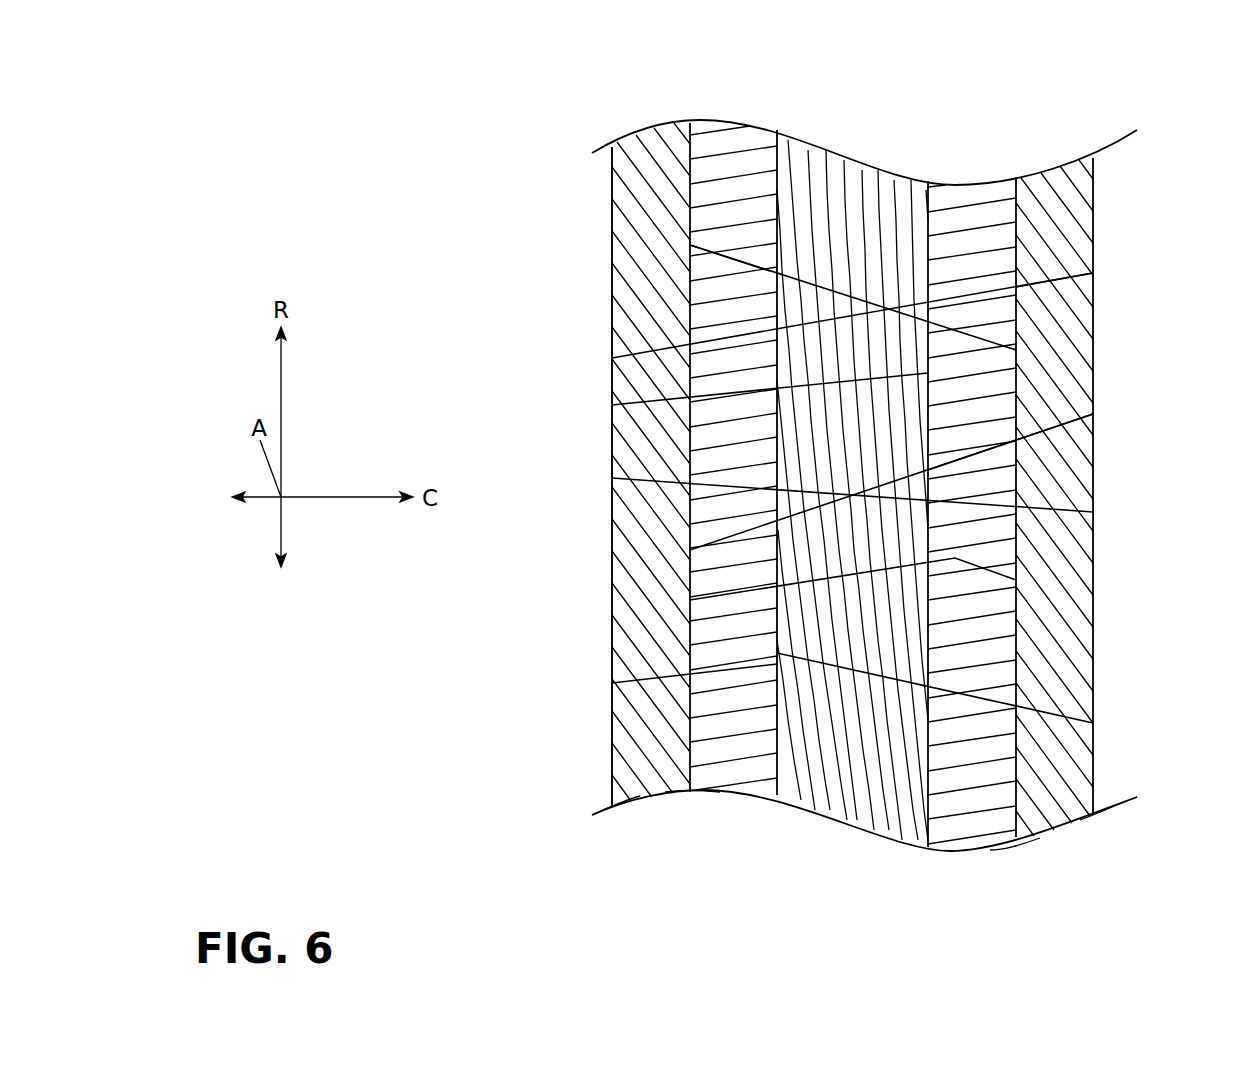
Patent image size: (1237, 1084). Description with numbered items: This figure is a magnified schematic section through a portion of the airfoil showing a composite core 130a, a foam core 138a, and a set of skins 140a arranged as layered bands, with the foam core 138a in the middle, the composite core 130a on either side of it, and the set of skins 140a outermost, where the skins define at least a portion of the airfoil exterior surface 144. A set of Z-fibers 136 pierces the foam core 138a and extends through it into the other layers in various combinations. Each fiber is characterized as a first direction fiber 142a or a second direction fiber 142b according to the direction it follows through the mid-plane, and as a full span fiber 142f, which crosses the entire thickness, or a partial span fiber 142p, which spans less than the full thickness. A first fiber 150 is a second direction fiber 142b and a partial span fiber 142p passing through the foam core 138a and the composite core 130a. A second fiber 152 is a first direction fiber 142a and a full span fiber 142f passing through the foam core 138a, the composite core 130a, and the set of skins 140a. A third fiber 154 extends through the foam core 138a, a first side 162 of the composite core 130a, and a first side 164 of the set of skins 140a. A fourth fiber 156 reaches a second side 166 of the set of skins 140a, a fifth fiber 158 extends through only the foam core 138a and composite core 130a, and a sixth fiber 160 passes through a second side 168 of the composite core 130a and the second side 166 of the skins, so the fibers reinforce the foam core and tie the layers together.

The composite core 130a is at (746, 180).
The foam core 138a is at (869, 188).
The set of skins 140a is at (652, 180).
The first fiber 150 is at (855, 300).
The set of Z-fibers 136 is at (712, 260).
The second fiber 152 is at (740, 337).
The third fiber 154 is at (730, 398).
The airfoil exterior surface 144 is at (610, 568).
The partial span fiber 142p is at (714, 556).
The first direction fiber 142a is at (711, 686).
The full span fiber 142f is at (1072, 270).
The second direction fiber 142b is at (1056, 499).
The fourth fiber 156 is at (1053, 427).
The fifth fiber 158 is at (1016, 580).
The sixth fiber 160 is at (997, 700).
The first side of the composite core 162 is at (692, 804).
The first side of the set of skins 164 is at (603, 811).
The second side of the set of skins 166 is at (1108, 822).
The second side of the composite core 168 is at (1029, 851).